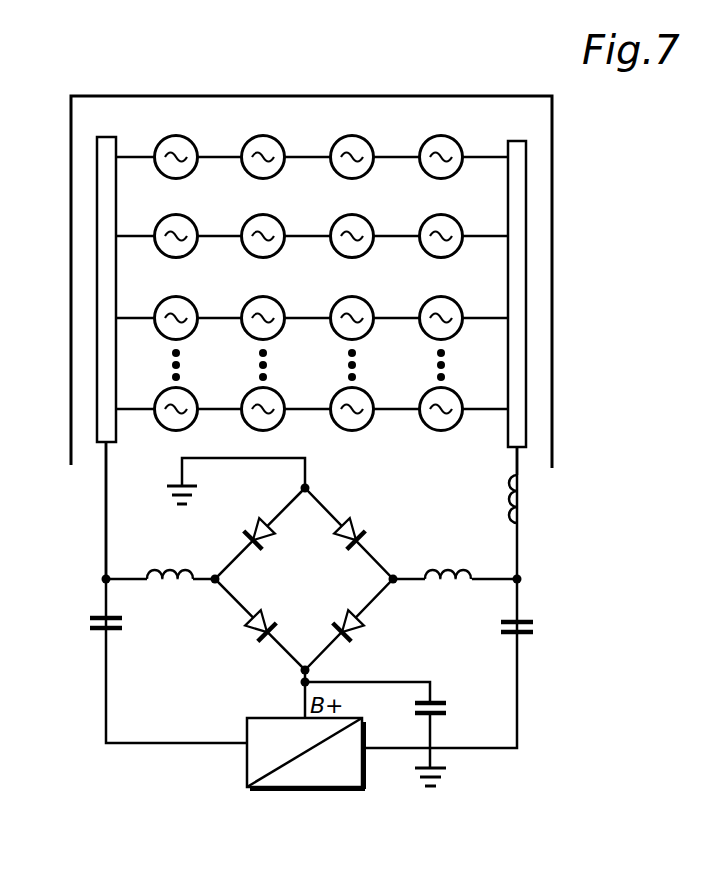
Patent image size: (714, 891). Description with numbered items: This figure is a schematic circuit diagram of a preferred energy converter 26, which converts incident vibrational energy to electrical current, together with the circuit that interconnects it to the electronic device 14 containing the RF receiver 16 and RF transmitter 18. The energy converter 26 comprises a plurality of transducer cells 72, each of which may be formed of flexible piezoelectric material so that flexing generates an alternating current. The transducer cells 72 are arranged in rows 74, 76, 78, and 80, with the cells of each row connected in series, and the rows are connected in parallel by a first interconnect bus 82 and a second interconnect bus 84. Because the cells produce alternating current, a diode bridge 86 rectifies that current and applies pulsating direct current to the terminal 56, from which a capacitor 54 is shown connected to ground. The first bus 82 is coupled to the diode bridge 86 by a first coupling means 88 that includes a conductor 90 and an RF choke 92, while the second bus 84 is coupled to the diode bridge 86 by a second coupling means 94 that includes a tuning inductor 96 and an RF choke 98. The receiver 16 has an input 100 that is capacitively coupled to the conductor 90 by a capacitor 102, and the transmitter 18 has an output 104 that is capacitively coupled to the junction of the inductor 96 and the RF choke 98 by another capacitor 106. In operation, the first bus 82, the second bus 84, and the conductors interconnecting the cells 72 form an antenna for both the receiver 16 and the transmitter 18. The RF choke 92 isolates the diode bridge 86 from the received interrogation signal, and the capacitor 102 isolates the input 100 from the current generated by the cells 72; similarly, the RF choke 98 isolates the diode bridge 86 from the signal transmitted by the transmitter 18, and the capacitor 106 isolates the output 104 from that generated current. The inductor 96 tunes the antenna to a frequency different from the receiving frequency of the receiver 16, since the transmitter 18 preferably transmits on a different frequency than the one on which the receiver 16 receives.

The electronic device 14 is at (192, 814).
The RF receiver 16 is at (255, 764).
The RF transmitter 18 is at (285, 778).
The energy converter 26 is at (597, 168).
The capacitor 54 is at (447, 703).
The terminal 56 is at (302, 683).
The transducer cell 72 is at (191, 138).
The row of transducer cells 74 is at (294, 139).
The row of transducer cells 76 is at (203, 224).
The row of transducer cells 78 is at (297, 305).
The row of transducer cells 80 is at (285, 393).
The first interconnect bus 82 is at (100, 260).
The second interconnect bus 84 is at (522, 265).
The diode bridge 86 is at (316, 590).
The first coupling means 88 is at (92, 543).
The conductor 90 is at (106, 520).
The RF choke 92 is at (170, 570).
The second coupling means 94 is at (543, 489).
The tuning inductor 96 is at (528, 516).
The RF choke 98 is at (465, 570).
The input 100 is at (245, 742).
The capacitor 102 is at (88, 628).
The output 104 is at (365, 748).
The capacitor 106 is at (535, 632).